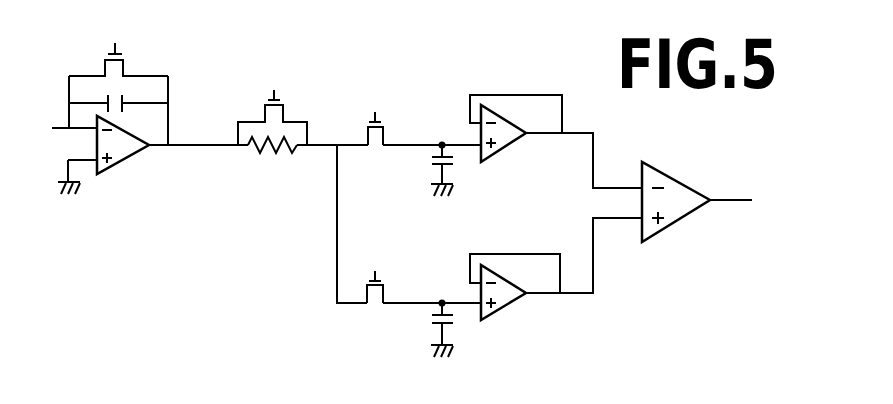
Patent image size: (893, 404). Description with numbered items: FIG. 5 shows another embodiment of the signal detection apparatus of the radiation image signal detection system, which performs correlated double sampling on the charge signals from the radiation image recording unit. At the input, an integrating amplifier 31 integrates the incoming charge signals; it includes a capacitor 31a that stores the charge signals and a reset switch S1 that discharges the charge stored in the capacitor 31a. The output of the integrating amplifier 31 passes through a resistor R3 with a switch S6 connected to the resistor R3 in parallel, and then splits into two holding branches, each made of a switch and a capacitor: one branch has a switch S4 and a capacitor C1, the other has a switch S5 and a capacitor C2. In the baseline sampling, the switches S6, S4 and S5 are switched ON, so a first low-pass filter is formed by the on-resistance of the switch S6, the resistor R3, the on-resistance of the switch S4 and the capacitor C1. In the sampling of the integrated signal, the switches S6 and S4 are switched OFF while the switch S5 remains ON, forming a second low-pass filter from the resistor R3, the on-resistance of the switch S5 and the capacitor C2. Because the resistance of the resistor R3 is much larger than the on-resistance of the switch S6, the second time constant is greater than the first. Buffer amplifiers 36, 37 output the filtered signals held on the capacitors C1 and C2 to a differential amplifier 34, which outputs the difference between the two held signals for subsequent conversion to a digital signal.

The integrating amplifier 31 is at (112, 179).
The capacitor 31a is at (129, 100).
The reset switch S1 is at (118, 56).
The switch S6 is at (276, 114).
The resistor R3 is at (272, 161).
The switch S4 is at (376, 115).
The capacitor C1 is at (425, 169).
The switch S5 is at (376, 274).
The capacitor C2 is at (425, 329).
The buffer amplifier 36 is at (515, 157).
The buffer amplifier 37 is at (507, 320).
The differential amplifier 34 is at (667, 172).